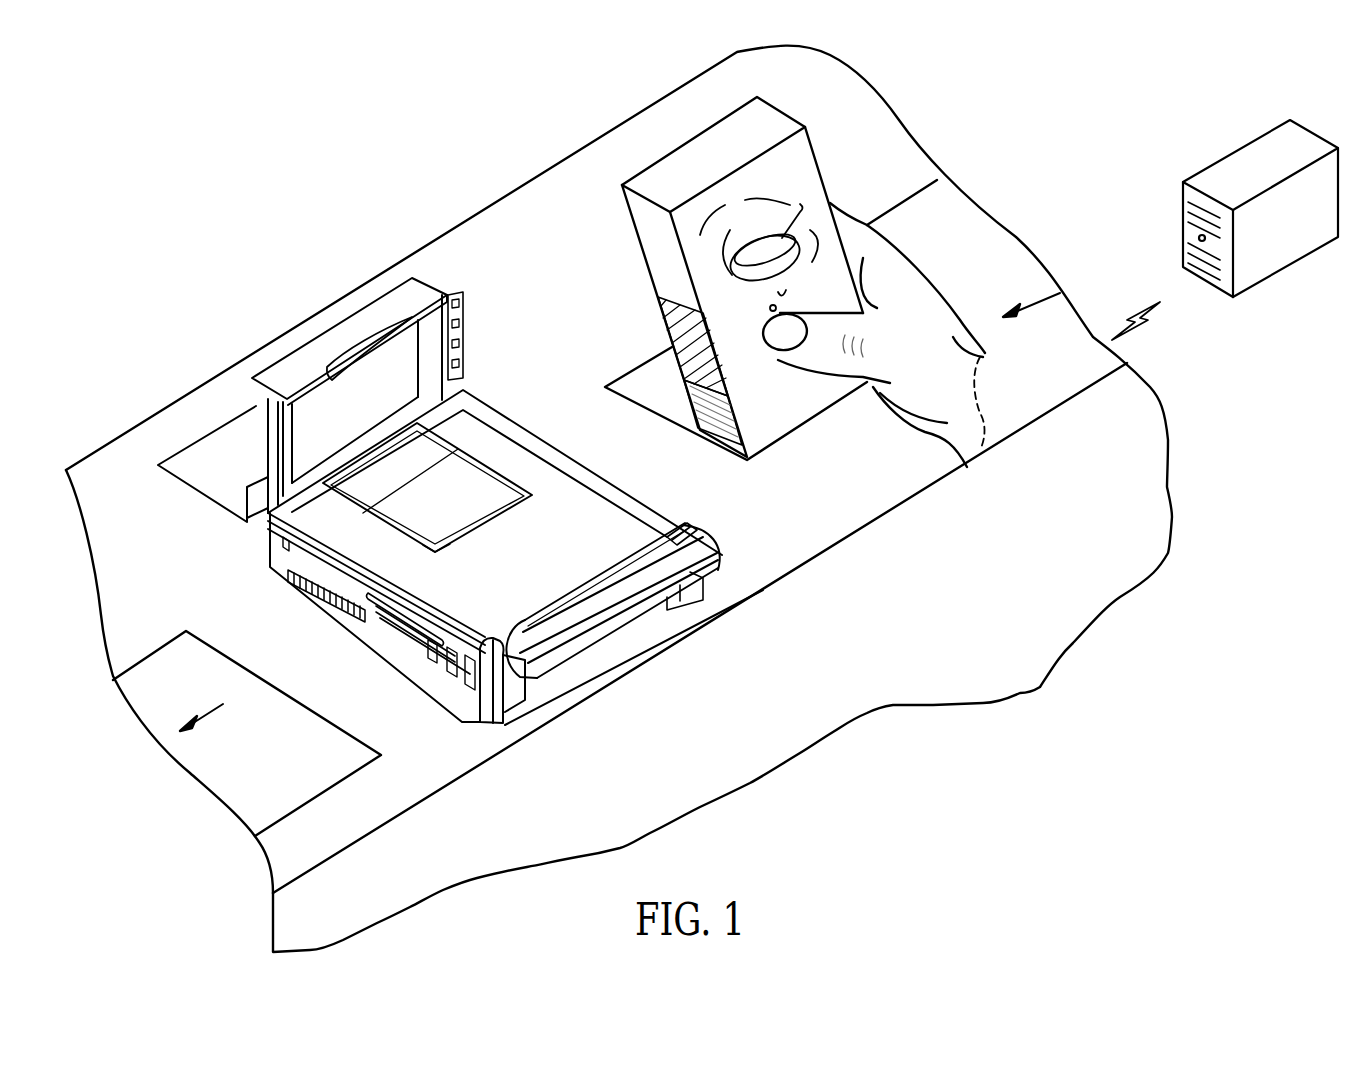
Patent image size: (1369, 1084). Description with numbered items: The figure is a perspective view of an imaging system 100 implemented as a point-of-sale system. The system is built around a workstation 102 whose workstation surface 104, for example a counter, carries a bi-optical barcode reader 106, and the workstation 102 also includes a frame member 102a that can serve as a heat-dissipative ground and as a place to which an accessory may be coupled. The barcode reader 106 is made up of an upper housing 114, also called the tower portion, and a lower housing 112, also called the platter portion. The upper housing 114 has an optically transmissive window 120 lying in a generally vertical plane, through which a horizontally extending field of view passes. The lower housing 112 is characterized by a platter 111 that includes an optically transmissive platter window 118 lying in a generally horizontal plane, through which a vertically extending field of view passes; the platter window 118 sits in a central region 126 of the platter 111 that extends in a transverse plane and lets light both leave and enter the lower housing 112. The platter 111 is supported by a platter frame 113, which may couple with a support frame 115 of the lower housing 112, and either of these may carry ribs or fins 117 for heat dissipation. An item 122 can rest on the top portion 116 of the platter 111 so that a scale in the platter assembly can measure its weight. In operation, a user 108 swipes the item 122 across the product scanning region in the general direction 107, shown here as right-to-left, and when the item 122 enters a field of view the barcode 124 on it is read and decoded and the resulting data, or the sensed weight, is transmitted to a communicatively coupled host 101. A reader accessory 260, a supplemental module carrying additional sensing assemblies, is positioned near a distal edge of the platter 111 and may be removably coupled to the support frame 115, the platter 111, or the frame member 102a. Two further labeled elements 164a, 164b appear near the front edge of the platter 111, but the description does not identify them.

The imaging system 100 is at (158, 378).
The host 101 is at (1183, 223).
The workstation 102 is at (437, 220).
The frame member 102a is at (500, 707).
The workstation surface 104 is at (873, 143).
The bi-optical barcode reader 106 is at (251, 444).
The general direction 107 is at (935, 272).
The user 108 is at (977, 363).
The platter 111 is at (583, 508).
The lower housing 112 is at (418, 672).
The platter frame 113 is at (507, 430).
The upper housing 114 is at (287, 380).
The support frame 115 is at (380, 620).
The top portion 116 is at (445, 617).
The ribs or fins 117 is at (352, 607).
The platter window 118 is at (442, 547).
The optically transmissive window 120 is at (400, 377).
The item 122 is at (802, 195).
The barcode 124 is at (737, 423).
The central region 126 is at (451, 487).
The first post 164a is at (483, 716).
The second post 164b is at (687, 525).
The reader accessory 260 is at (488, 642).